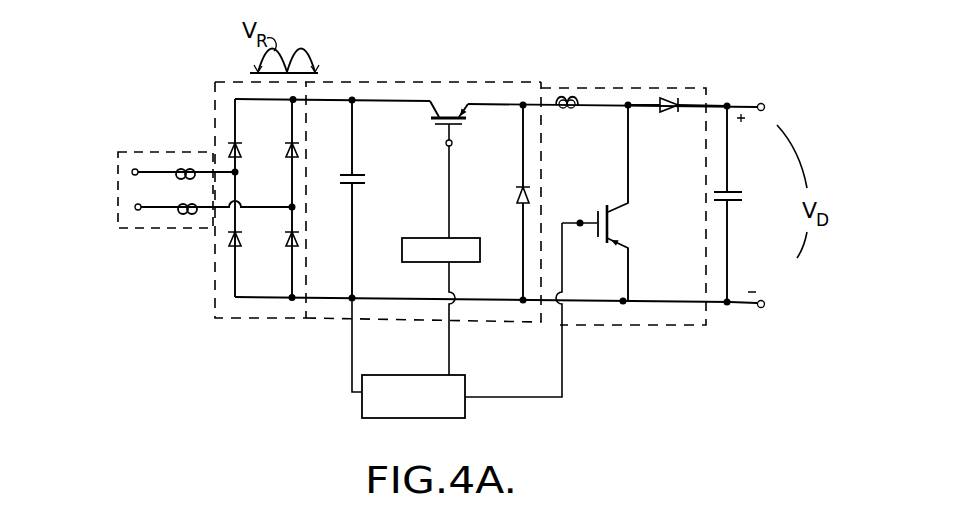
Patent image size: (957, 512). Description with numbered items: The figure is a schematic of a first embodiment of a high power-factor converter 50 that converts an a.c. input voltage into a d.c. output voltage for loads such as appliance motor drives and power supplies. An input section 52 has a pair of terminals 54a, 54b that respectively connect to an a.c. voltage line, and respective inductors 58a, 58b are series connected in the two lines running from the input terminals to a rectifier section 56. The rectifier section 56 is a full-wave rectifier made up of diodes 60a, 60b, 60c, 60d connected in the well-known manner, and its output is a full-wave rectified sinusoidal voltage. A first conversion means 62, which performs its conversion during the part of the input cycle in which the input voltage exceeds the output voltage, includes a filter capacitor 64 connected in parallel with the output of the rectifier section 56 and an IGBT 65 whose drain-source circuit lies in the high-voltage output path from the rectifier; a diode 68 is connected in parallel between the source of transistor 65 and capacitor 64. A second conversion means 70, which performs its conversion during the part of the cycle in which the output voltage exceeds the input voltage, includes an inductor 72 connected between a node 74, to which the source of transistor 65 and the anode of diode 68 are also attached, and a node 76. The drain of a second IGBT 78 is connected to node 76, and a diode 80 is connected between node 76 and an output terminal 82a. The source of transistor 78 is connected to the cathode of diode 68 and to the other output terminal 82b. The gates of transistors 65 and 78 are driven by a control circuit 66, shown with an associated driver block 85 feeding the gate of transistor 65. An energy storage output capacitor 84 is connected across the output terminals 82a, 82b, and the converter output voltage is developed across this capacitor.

The high power-factor converter 50 is at (283, 315).
The input section 52 is at (173, 123).
The terminal 54a is at (132, 172).
The terminal 54b is at (135, 207).
The rectifier section 56 is at (213, 295).
The inductor 58a is at (195, 167).
The inductor 58b is at (184, 214).
The diode 60a is at (236, 142).
The diode 60b is at (240, 232).
The diode 60c is at (295, 141).
The diode 60d is at (300, 243).
The first conversion means 62 is at (410, 53).
The filter capacitor 64 is at (360, 175).
The IGBT 65 is at (432, 118).
The control circuit 66 is at (362, 405).
The diode 68 is at (516, 207).
The second conversion means 70 is at (614, 56).
The inductor 72 is at (587, 106).
The node 74 is at (523, 100).
The node 76 is at (632, 100).
The IGBT 78 is at (618, 204).
The diode 80 is at (676, 108).
The output terminal 82a is at (765, 105).
The output terminal 82b is at (764, 301).
The energy storage output capacitor 84 is at (735, 187).
The driver circuit 85 is at (402, 248).